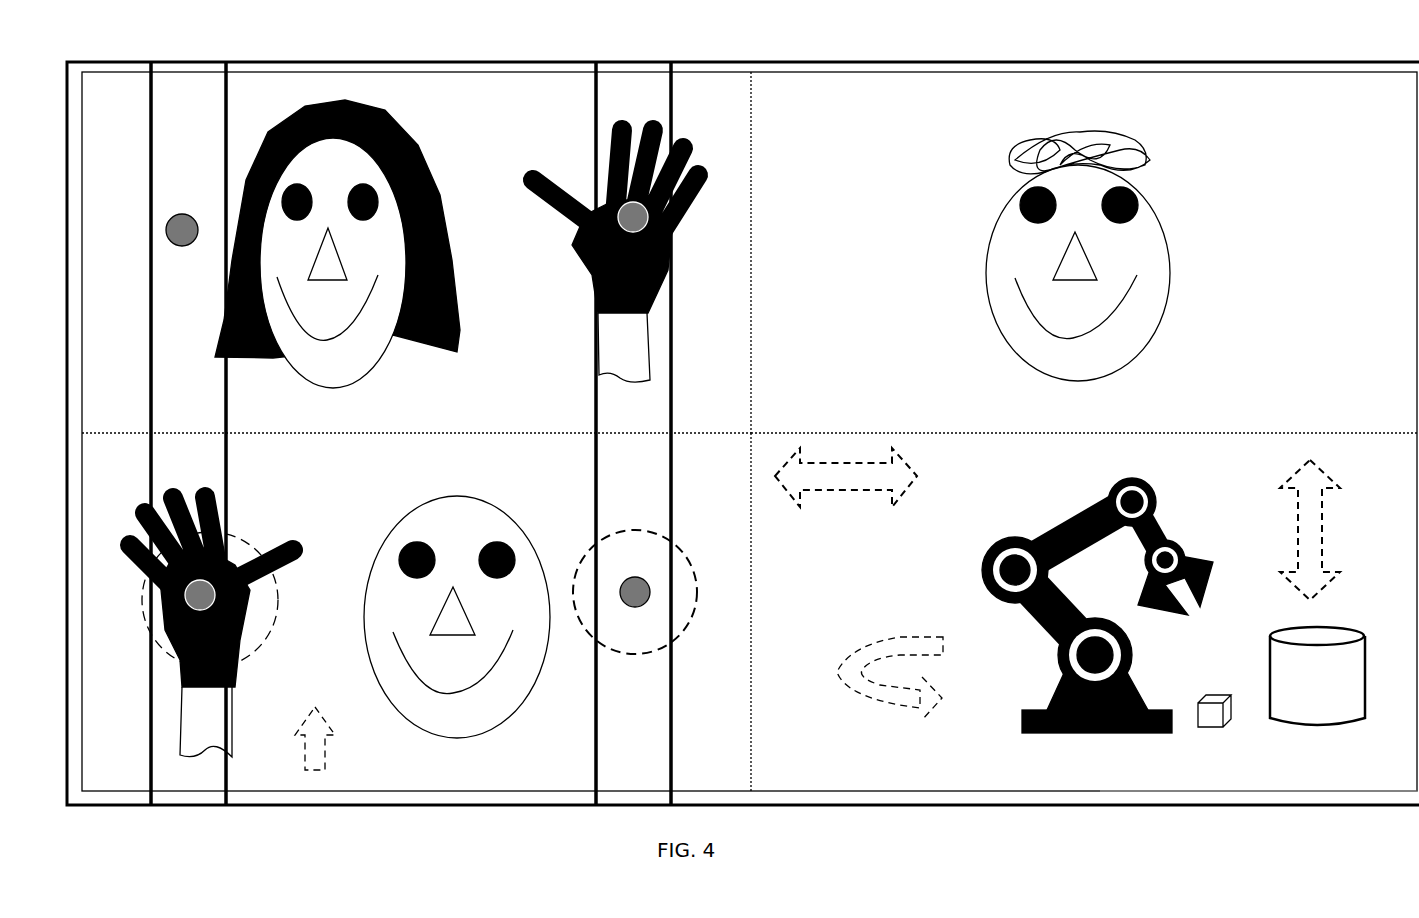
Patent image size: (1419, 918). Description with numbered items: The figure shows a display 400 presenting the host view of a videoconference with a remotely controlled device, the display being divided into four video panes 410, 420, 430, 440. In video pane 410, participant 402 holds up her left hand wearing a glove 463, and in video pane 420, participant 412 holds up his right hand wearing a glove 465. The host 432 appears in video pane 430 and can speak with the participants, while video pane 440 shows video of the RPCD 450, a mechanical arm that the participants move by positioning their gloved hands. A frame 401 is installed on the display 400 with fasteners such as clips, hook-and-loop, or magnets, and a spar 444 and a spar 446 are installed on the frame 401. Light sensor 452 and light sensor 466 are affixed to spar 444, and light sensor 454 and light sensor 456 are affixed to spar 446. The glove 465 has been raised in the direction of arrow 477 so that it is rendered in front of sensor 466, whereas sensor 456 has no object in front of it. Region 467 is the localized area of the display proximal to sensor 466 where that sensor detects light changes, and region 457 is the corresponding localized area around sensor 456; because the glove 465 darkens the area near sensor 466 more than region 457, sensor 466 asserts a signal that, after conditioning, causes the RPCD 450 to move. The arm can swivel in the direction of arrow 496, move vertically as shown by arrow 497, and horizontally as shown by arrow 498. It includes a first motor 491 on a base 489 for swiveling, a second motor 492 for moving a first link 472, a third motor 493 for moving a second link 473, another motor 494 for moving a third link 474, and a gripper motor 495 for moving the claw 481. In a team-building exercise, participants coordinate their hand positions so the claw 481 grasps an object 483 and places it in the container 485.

The display 400 is at (1312, 59).
The frame 401 is at (875, 66).
The participant 402 is at (355, 360).
The video pane 410 is at (736, 421).
The participant 412 is at (484, 717).
The video pane 420 is at (731, 783).
The video pane 430 is at (1399, 421).
The host 432 is at (993, 255).
The video pane 440 is at (1393, 783).
The spar 444 is at (208, 103).
The spar 446 is at (650, 103).
The RPCD 450 is at (1089, 603).
The light sensor 452 is at (178, 223).
The light sensor 454 is at (633, 217).
The light sensor 456 is at (635, 580).
The region 457 is at (640, 652).
The glove 463 is at (573, 253).
The glove 465 is at (235, 655).
The light sensor 466 is at (200, 595).
The region 467 is at (255, 558).
The first link 472 is at (1035, 637).
The second link 473 is at (1063, 563).
The third link 474 is at (1160, 530).
The arrow 477 is at (333, 752).
The claw 481 is at (1195, 553).
The object 483 is at (1208, 727).
The container 485 is at (1339, 703).
The base 489 is at (1040, 740).
The first motor 491 is at (1050, 698).
The second motor 492 is at (1132, 650).
The third motor 493 is at (990, 552).
The third motor 494 is at (1130, 478).
The fourth motor 495 is at (1185, 545).
The arrow 496 is at (908, 635).
The arrow 497 is at (1340, 530).
The arrow 498 is at (815, 492).